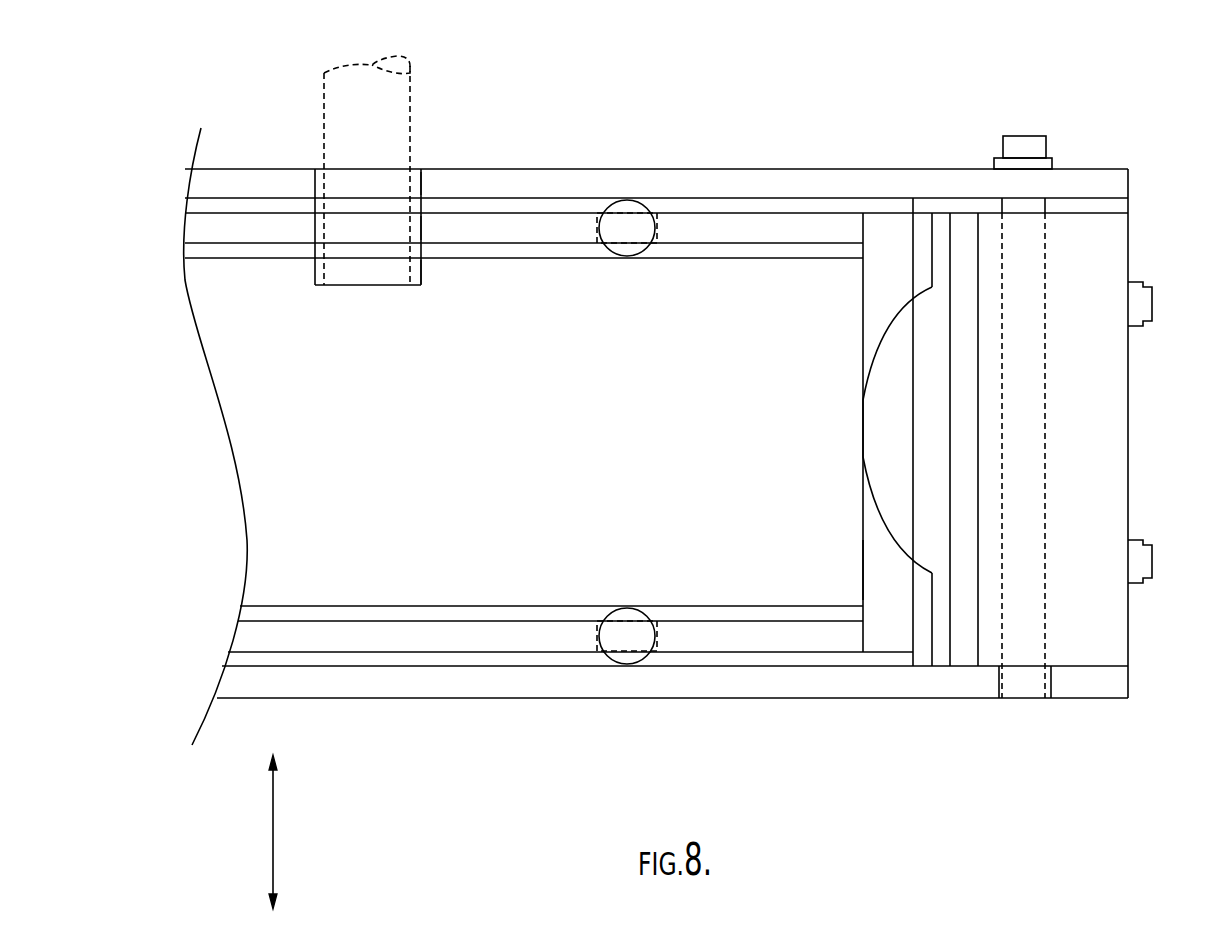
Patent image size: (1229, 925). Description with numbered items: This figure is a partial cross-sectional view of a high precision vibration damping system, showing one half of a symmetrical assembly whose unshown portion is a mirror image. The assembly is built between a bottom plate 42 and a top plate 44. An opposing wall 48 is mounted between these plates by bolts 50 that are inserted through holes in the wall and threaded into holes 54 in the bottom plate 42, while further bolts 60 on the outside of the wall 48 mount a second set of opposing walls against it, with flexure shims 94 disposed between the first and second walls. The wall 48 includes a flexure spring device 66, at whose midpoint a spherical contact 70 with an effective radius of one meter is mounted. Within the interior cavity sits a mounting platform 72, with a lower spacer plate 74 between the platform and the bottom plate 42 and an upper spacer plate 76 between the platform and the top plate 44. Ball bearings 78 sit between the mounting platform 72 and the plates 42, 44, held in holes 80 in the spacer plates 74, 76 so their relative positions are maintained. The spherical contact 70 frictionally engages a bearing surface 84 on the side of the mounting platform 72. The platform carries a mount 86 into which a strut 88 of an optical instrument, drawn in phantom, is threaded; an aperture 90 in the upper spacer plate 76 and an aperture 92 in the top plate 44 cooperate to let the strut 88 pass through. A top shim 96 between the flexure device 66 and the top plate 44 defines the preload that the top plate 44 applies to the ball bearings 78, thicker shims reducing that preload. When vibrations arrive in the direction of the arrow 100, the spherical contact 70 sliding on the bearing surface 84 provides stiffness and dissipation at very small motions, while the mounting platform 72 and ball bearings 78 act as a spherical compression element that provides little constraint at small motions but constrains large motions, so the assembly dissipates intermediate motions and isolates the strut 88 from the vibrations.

The bottom plate 42 is at (813, 687).
The top plate 44 is at (762, 182).
The opposing wall 48 is at (1110, 437).
The bolt 50 is at (1032, 142).
The hole 54 is at (1053, 685).
The bolt 60 is at (1152, 305).
The flexure spring device 66 is at (943, 228).
The spherical contact 70 is at (885, 477).
The mounting platform 72 is at (403, 592).
The lower spacer plate 74 is at (740, 642).
The upper spacer plate 76 is at (683, 225).
The ball bearing 78 is at (633, 208).
The hole 80 is at (597, 223).
The bearing surface 84 is at (865, 558).
The mount 86 is at (421, 272).
The strut 88 is at (322, 117).
The aperture 90 is at (421, 228).
The aperture 92 is at (422, 183).
The flexure shim 94 is at (892, 223).
The top shim 96 is at (1121, 207).
The arrow 100 is at (273, 842).